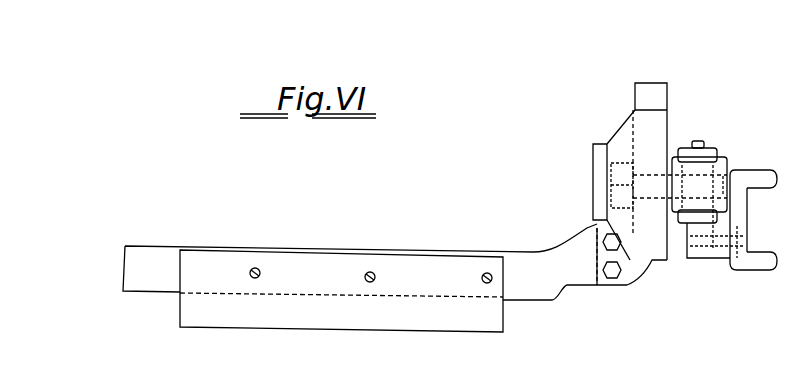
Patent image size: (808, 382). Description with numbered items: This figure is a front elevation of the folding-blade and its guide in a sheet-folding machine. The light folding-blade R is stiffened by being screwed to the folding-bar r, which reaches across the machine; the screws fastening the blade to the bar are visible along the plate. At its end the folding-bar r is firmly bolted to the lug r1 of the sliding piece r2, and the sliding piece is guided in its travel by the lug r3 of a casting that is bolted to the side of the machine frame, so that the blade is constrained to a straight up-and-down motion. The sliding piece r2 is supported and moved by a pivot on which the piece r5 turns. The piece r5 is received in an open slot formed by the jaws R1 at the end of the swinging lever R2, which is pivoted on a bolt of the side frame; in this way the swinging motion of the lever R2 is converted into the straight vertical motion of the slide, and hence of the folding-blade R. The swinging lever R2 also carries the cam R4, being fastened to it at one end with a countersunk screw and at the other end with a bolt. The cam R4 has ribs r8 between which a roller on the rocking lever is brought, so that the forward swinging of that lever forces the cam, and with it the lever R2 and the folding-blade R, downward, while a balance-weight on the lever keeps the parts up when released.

The folding-bar r is at (375, 262).
The folding-blade R is at (341, 291).
The lug r1 is at (617, 284).
The sliding piece r2 is at (680, 162).
The lug r3 is at (643, 149).
The jaw R1 is at (712, 153).
The swinging lever R2 is at (697, 142).
The piece r5 is at (710, 168).
The rib r8 is at (761, 223).
The cam R4 is at (742, 205).